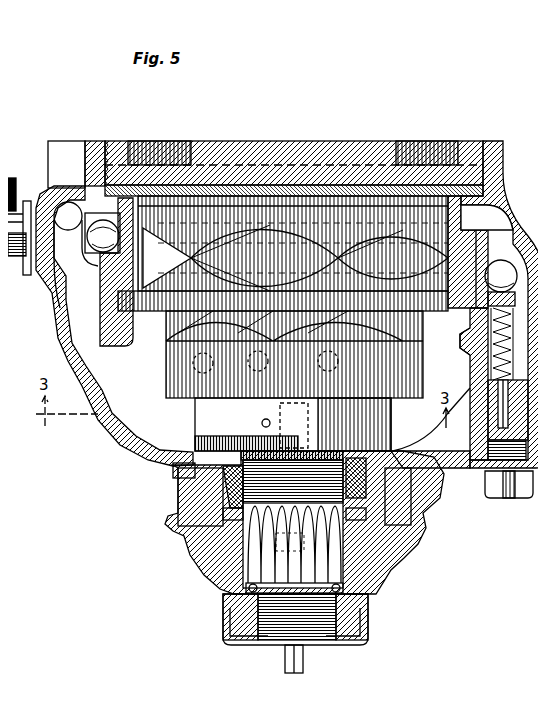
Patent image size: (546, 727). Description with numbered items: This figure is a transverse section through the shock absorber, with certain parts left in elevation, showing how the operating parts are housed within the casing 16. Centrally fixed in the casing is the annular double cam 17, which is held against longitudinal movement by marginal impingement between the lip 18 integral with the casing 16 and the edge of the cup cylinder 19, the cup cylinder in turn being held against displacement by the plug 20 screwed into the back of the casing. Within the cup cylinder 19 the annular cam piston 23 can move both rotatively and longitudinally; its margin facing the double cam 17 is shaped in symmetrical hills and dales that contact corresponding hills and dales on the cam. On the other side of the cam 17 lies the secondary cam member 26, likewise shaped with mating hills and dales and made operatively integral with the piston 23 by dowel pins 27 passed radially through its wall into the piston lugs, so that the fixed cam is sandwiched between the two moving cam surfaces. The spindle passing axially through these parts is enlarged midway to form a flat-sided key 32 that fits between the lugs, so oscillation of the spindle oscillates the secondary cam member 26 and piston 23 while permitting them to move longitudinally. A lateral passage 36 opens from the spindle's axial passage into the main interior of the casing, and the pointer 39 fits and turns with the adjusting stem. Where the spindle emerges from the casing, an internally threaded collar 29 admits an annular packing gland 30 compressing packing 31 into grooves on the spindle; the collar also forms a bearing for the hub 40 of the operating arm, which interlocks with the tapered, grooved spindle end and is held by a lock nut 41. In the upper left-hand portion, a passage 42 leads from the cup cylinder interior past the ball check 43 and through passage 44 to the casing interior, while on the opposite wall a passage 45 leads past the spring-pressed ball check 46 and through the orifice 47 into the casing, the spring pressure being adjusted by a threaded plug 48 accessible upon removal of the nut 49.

The casing 16 is at (56, 348).
The annular double cam 17 is at (117, 294).
The lip 18 is at (97, 323).
The cup cylinder 19 is at (203, 180).
The plug 20 is at (292, 150).
The annular cam piston 23 is at (293, 200).
The secondary cam member 26 is at (165, 353).
The dowel pins 27 is at (210, 361).
The internally threaded collar 29 is at (207, 500).
The annular packing gland 30 is at (358, 512).
The packing 31 is at (163, 458).
The flat-sided key 32 is at (326, 415).
The lateral passage 36 is at (254, 416).
The pointer 39 is at (310, 640).
The hub 40 is at (391, 548).
The lock nut 41 is at (345, 615).
The passage 42 is at (118, 186).
The ball check 43 is at (92, 214).
The passage 44 is at (60, 272).
The passage 45 is at (478, 205).
The ball check 46 is at (493, 256).
The orifice 47 is at (461, 333).
The threaded plug 48 is at (480, 390).
The nut 49 is at (490, 471).